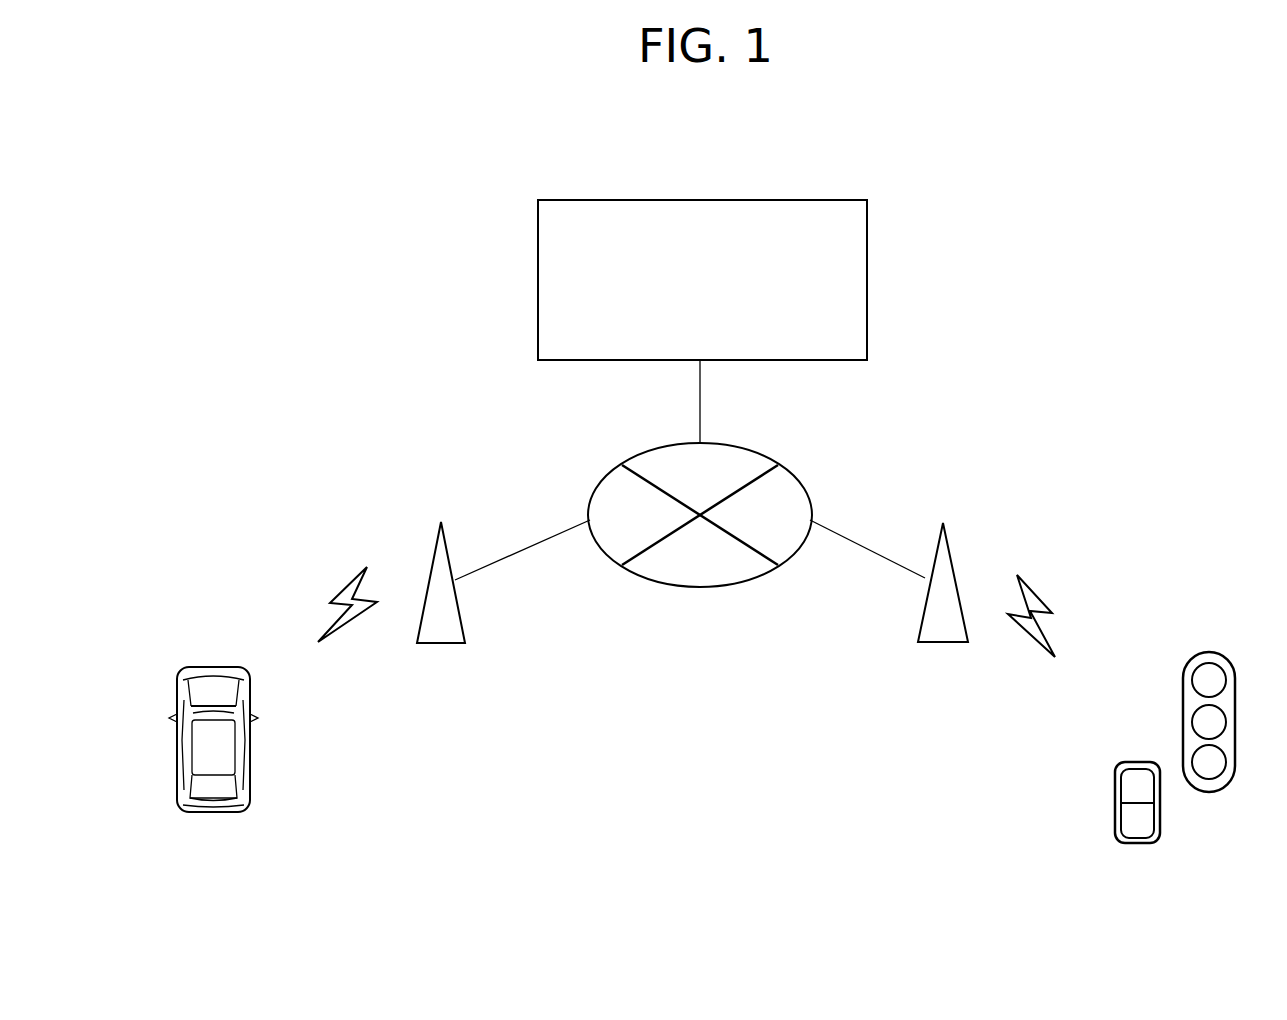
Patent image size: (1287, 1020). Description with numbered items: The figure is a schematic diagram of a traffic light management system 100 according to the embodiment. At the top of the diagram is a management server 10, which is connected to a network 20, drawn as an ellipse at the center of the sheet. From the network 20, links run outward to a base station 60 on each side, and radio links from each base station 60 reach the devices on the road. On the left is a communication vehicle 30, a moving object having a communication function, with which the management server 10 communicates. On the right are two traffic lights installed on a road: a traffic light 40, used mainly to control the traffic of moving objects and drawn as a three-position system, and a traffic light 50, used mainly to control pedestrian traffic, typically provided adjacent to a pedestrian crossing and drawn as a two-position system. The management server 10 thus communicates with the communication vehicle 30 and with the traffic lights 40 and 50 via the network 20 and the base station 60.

The traffic light management system 100 is at (300, 248).
The management server 10 is at (638, 200).
The network 20 is at (604, 480).
The communication vehicle 30 is at (216, 665).
The traffic light 40 is at (1184, 673).
The traffic light 50 is at (1118, 774).
The base station 60 is at (440, 533).